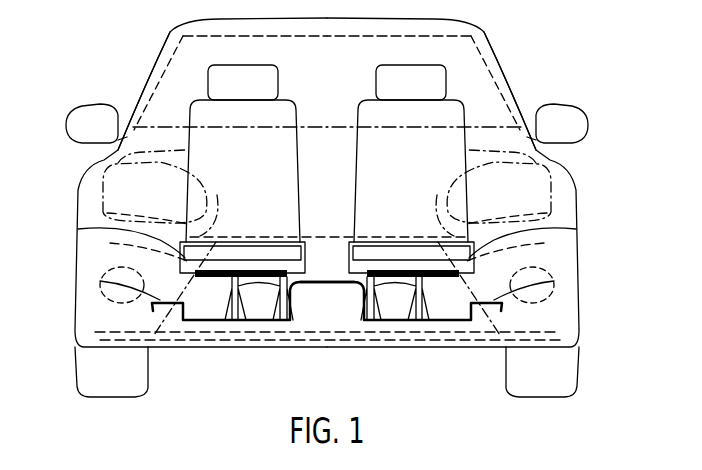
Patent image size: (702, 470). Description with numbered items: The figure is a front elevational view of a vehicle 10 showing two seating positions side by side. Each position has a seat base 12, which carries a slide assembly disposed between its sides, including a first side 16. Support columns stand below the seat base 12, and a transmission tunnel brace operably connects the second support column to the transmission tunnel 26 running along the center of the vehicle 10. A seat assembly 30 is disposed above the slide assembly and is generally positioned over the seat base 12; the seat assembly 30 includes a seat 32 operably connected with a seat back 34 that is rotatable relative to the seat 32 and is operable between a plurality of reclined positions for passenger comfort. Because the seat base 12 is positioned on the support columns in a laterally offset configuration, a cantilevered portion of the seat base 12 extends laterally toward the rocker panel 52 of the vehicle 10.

The vehicle 10 is at (497, 40).
The seat base 12 is at (210, 312).
The first side 16 is at (90, 229).
The transmission tunnel 26 is at (314, 283).
The seat assembly 30 is at (181, 77).
The seat 32 is at (243, 245).
The seat back 34 is at (382, 158).
The rocker panel 52 is at (100, 281).